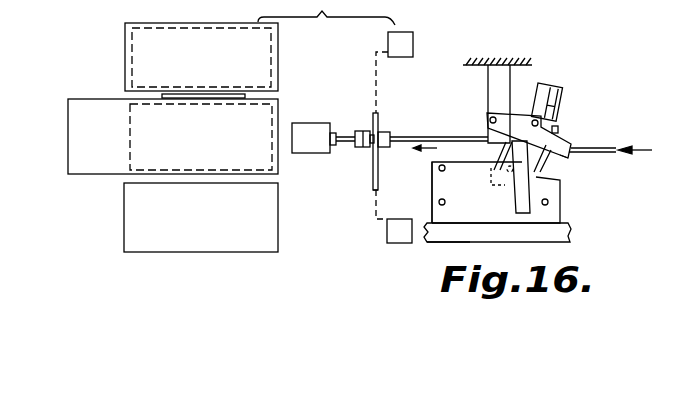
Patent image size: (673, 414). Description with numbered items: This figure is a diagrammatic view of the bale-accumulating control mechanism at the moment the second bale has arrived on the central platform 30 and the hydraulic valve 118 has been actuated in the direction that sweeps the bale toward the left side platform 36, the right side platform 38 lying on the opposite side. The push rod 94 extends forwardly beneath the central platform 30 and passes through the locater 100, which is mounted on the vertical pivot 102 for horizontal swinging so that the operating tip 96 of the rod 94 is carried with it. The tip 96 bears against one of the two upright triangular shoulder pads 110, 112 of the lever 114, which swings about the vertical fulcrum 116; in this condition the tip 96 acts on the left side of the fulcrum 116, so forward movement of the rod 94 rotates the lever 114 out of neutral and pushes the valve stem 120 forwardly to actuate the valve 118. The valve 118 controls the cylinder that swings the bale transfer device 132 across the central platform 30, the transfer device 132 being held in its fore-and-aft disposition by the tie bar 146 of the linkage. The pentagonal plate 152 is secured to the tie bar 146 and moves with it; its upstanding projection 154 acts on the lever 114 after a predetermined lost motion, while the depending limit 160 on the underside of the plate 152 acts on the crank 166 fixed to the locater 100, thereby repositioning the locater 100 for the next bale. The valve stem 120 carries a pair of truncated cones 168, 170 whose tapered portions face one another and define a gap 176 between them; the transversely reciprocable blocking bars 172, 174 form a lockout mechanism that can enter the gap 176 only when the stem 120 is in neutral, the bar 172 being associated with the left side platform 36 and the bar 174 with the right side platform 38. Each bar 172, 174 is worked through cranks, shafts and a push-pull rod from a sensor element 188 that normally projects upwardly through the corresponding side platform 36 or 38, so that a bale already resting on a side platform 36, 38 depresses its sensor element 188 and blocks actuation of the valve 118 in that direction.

The central platform 30 is at (90, 181).
The left side platform 36 is at (110, 232).
The right side platform 38 is at (108, 42).
The push rod 94 is at (612, 148).
The operating tip 96 is at (557, 160).
The locater 100 is at (514, 110).
The vertical pivot 102 is at (488, 118).
The shoulder pad 110 is at (558, 132).
The shoulder pad 112 is at (565, 91).
The lever 114 is at (531, 192).
The vertical fulcrum 116 is at (562, 113).
The hydraulic valve 118 is at (300, 123).
The valve stem 120 is at (425, 137).
The bale transfer device 132 is at (190, 88).
The tie bar 146 is at (431, 242).
The pentagonal plate 152 is at (432, 194).
The upstanding projection 154 is at (563, 217).
The depending limit 160 is at (496, 192).
The crank 166 is at (500, 148).
The truncated cone 168 is at (358, 148).
The truncated cone 170 is at (382, 130).
The blocking bar 172 is at (381, 187).
The blocking bar 174 is at (373, 116).
The gap 176 is at (370, 146).
The sensor element 188 is at (404, 36).